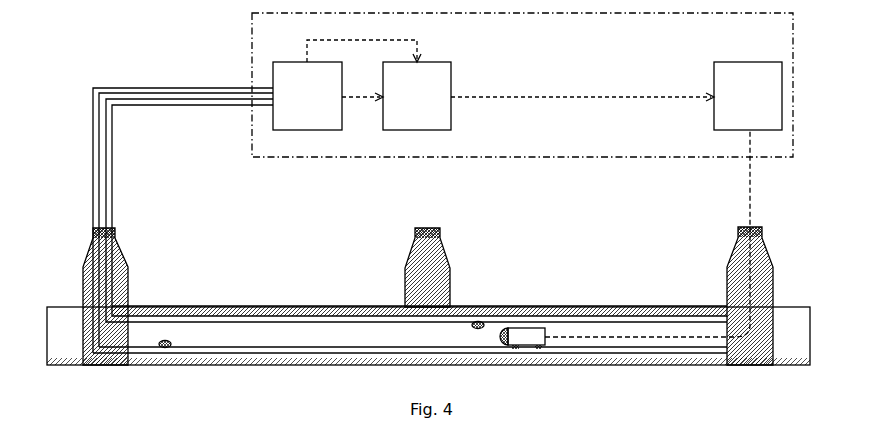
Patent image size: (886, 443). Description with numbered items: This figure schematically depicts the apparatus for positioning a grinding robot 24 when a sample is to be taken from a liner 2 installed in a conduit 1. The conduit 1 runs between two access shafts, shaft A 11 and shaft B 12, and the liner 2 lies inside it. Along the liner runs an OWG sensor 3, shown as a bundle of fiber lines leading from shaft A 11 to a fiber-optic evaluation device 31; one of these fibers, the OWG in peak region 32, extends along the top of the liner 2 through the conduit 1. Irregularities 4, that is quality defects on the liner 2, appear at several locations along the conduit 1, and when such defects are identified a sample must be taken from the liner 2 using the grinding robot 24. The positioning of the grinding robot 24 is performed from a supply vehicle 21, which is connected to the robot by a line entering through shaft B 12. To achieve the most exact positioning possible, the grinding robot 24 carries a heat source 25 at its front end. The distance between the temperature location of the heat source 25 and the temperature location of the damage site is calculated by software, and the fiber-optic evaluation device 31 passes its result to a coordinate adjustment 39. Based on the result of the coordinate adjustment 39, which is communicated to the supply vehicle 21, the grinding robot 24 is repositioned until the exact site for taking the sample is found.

The conduit 1 is at (797, 328).
The liner 2 is at (683, 325).
The OWG sensor 3 is at (165, 88).
The irregularities 4 is at (166, 340).
The shaft A 11 is at (90, 260).
The shaft B 12 is at (768, 280).
The supply vehicle 21 is at (748, 96).
The grinding robot 24 is at (530, 332).
The heat source 25 is at (505, 325).
The fiber-optic evaluation device 31 is at (307, 96).
The OWG in peak region 32 is at (262, 317).
The coordinate adjustment 39 is at (417, 96).